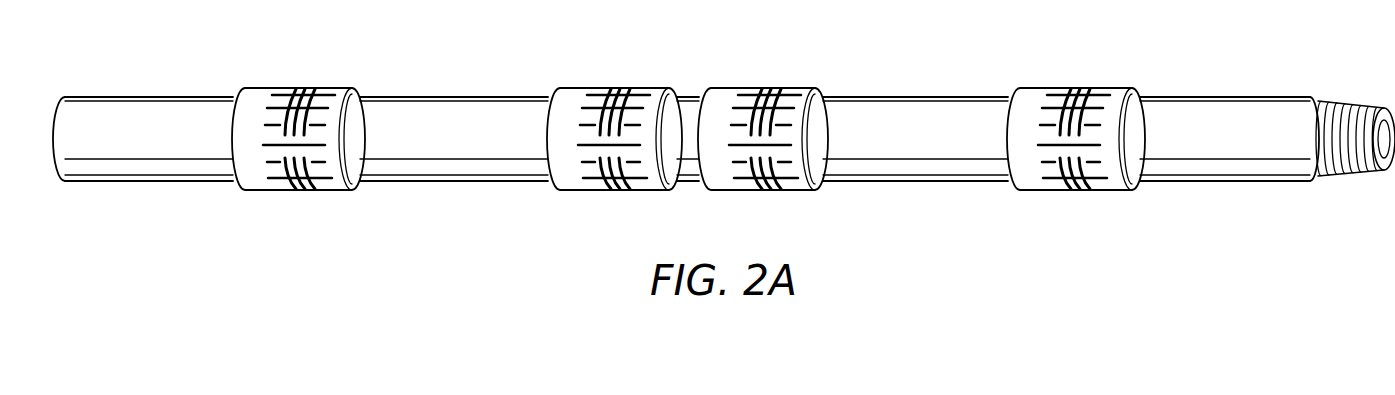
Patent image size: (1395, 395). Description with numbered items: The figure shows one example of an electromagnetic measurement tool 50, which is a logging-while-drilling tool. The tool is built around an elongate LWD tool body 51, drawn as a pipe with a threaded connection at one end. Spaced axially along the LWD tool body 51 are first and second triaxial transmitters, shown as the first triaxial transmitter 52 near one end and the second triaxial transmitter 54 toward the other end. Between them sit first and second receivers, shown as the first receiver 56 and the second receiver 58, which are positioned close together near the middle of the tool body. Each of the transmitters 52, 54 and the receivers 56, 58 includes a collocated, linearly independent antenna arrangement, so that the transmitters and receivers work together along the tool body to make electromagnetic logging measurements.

The electromagnetic measurement tool 50 is at (929, 71).
The LWD tool body 51 is at (148, 95).
The first triaxial transmitter 52 is at (287, 89).
The second triaxial transmitter 54 is at (1108, 89).
The first receiver 56 is at (600, 89).
The second receiver 58 is at (783, 89).